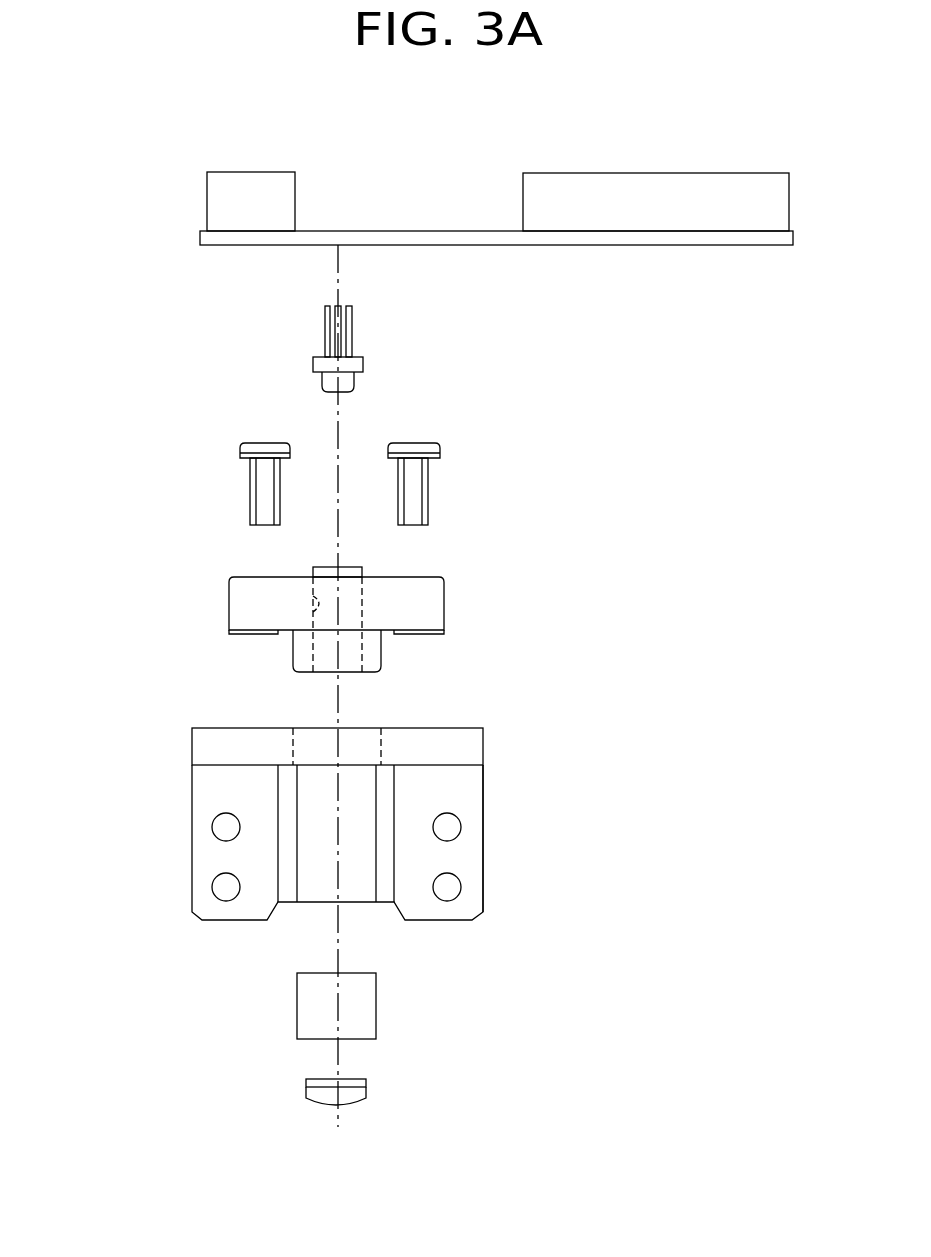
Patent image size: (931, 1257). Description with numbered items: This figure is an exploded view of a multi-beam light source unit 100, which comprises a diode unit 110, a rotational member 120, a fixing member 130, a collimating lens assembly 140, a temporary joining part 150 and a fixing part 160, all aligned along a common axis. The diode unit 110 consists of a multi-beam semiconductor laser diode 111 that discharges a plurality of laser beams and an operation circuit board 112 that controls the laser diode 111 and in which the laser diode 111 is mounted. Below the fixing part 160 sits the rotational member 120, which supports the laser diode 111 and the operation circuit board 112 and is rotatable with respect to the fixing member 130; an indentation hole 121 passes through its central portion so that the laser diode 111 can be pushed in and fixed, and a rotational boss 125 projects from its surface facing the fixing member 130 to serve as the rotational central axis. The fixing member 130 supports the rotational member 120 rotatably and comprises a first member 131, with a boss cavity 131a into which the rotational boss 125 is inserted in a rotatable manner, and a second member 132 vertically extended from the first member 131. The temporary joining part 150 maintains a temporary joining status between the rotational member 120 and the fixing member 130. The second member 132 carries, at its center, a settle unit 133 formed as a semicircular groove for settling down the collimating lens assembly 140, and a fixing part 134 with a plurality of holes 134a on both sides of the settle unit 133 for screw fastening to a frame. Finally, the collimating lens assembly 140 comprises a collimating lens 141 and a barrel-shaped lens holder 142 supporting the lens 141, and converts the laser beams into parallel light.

The multi-beam light source unit 100 is at (766, 142).
The diode unit 110 is at (110, 275).
The multi-beam semiconductor laser diode 111 is at (313, 366).
The operation circuit board 112 is at (200, 238).
The rotational member 120 is at (474, 605).
The indentation hole 121 is at (313, 614).
The rotational boss 125 is at (381, 648).
The fixing member 130 is at (90, 742).
The first member 131 is at (180, 748).
The boss cavity 131a is at (382, 740).
The second member 132 is at (180, 838).
The settle unit 133 is at (357, 895).
The fixing part 134 is at (483, 776).
The holes 134a is at (447, 887).
The collimating lens assembly 140 is at (208, 993).
The collimating lens 141 is at (306, 1085).
The lens holder 142 is at (297, 1005).
The temporary joining part 150 is at (558, 653).
The fixing part 160 is at (412, 443).